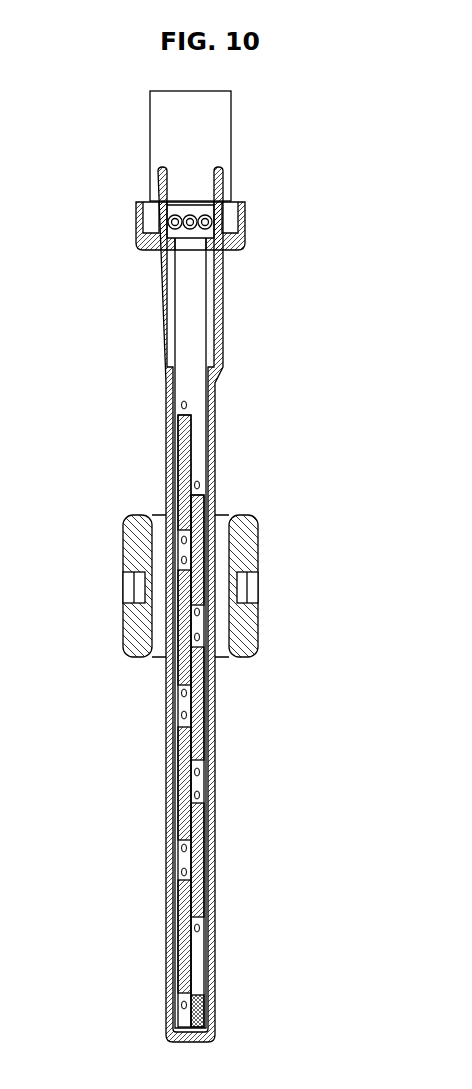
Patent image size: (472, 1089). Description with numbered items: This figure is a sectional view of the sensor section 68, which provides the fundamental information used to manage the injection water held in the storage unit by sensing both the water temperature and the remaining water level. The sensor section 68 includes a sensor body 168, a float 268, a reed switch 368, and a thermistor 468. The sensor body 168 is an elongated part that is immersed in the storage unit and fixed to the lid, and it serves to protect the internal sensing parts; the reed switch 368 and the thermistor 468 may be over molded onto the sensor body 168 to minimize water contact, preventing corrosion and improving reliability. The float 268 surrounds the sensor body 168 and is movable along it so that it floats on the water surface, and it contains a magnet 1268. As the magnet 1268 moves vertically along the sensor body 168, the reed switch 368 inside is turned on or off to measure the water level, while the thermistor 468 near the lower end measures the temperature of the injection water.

The sensor section 68 is at (248, 368).
The sensor body 168 is at (170, 787).
The reed switch 368 is at (183, 472).
The thermistor 468 is at (198, 1013).
The float 268 is at (248, 635).
The magnet 1268 is at (243, 585).